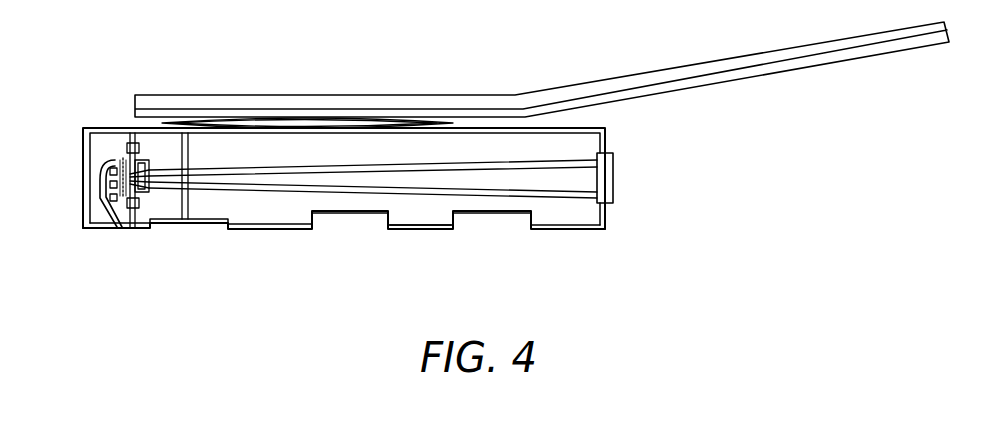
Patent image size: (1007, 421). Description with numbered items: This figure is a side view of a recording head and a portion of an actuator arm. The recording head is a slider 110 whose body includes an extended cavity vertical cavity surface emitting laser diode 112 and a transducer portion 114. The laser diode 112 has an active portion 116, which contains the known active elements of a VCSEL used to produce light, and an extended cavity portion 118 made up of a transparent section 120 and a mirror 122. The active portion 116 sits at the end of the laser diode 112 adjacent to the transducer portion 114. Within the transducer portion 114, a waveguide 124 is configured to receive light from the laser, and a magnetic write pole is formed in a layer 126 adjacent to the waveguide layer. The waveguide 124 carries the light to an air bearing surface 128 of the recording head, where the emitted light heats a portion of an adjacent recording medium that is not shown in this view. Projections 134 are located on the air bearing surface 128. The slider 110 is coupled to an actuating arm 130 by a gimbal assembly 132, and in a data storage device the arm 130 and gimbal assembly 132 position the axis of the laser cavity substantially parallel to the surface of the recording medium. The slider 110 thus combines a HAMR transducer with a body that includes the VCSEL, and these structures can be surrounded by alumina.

The slider 110 is at (642, 136).
The extended cavity vertical cavity surface emitting laser diode 112 is at (399, 250).
The transducer portion 114 is at (91, 112).
The active portion 116 is at (143, 212).
The extended cavity portion 118 is at (488, 181).
The transparent section 120 is at (298, 180).
The mirror 122 is at (614, 178).
The waveguide 124 is at (108, 203).
The layer 126 is at (101, 220).
The air bearing surface 128 is at (118, 231).
The actuating arm 130 is at (732, 57).
The gimbal assembly 132 is at (395, 133).
The projections 134 is at (432, 230).